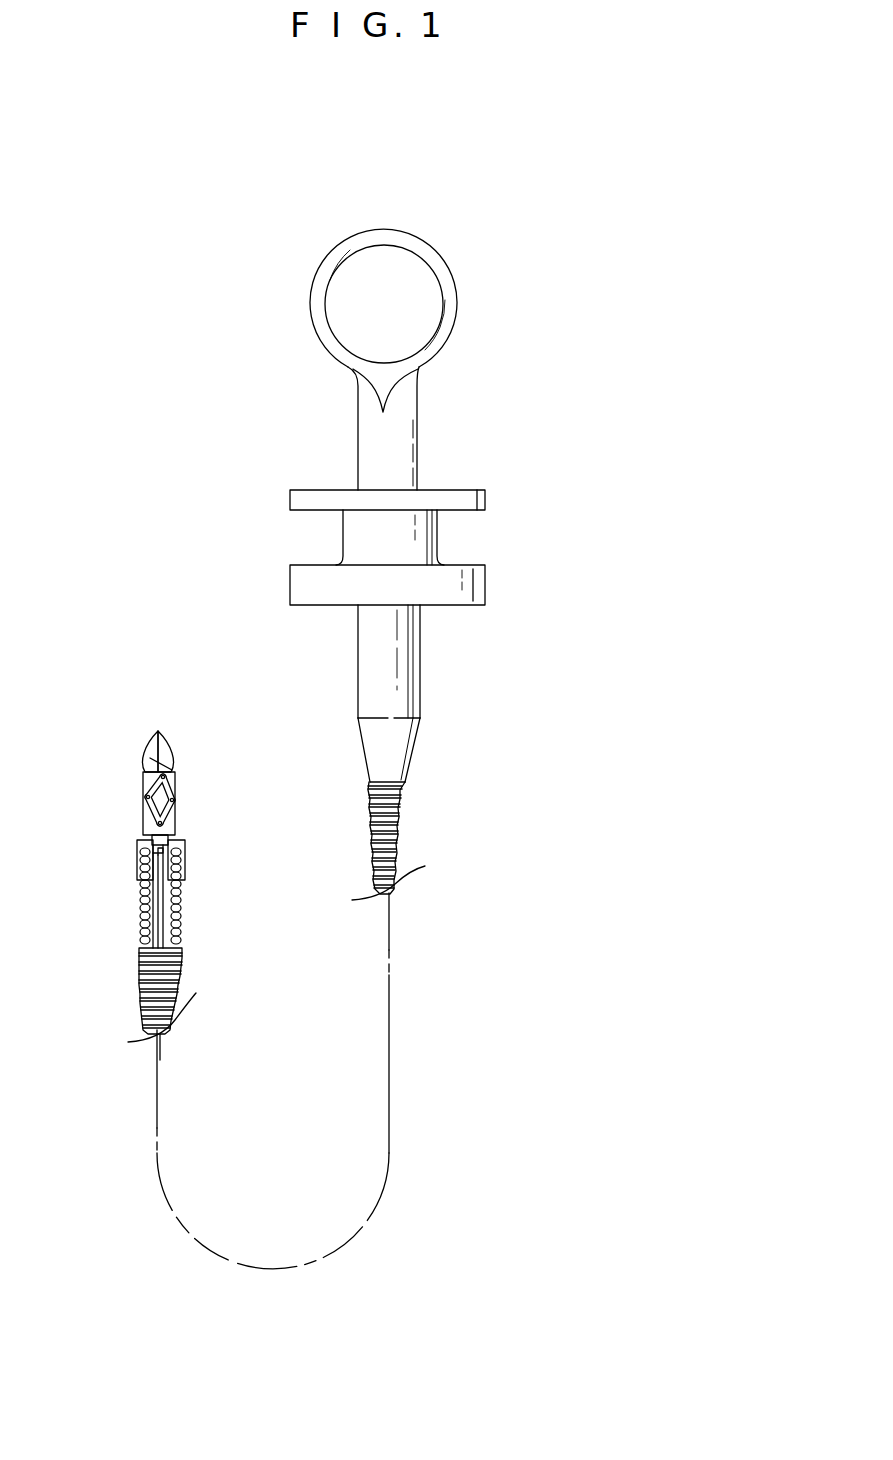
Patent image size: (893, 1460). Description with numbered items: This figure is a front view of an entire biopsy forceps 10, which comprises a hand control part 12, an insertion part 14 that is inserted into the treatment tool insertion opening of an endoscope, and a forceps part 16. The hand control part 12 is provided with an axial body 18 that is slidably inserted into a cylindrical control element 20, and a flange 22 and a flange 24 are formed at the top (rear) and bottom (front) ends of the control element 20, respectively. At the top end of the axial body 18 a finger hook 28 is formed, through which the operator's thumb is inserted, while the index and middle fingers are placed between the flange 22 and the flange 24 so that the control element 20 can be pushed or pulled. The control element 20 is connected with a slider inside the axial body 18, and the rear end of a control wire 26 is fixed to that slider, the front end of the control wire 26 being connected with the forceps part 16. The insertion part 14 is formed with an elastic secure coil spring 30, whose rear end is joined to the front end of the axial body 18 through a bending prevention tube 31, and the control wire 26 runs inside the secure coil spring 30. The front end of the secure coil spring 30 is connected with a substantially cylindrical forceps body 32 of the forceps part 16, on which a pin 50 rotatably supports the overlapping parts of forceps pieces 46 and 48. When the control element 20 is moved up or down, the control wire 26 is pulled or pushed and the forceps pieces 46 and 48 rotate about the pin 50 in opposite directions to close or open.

The biopsy forceps 10 is at (218, 270).
The hand control part 12 is at (493, 447).
The insertion part 14 is at (433, 1020).
The forceps part 16 is at (205, 780).
The axial body 18 is at (370, 423).
The control element 20 is at (440, 548).
The flange 22 is at (490, 505).
The flange 24 is at (310, 560).
The control wire 26 is at (392, 1113).
The finger hook 28 is at (460, 300).
The secure coil spring 30 is at (405, 830).
The bending prevention tube 31 is at (407, 737).
The forceps body 32 is at (176, 823).
The forceps piece 46 is at (165, 742).
The forceps piece 48 is at (143, 750).
The pin 50 is at (172, 760).